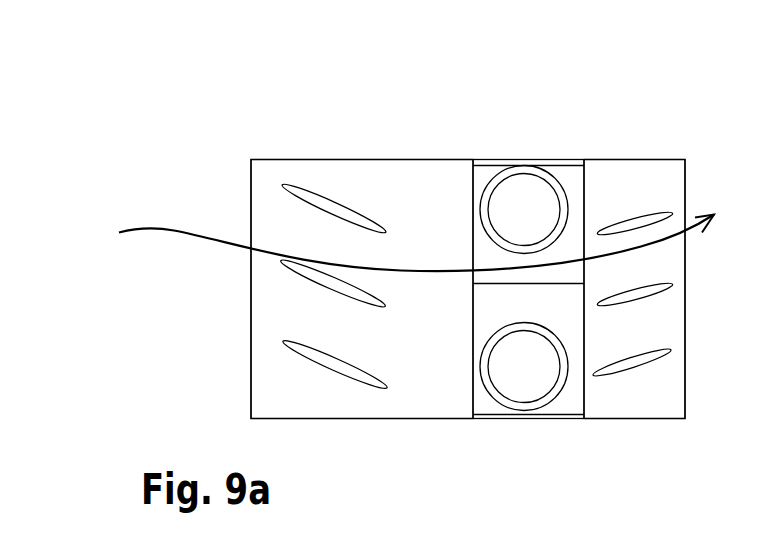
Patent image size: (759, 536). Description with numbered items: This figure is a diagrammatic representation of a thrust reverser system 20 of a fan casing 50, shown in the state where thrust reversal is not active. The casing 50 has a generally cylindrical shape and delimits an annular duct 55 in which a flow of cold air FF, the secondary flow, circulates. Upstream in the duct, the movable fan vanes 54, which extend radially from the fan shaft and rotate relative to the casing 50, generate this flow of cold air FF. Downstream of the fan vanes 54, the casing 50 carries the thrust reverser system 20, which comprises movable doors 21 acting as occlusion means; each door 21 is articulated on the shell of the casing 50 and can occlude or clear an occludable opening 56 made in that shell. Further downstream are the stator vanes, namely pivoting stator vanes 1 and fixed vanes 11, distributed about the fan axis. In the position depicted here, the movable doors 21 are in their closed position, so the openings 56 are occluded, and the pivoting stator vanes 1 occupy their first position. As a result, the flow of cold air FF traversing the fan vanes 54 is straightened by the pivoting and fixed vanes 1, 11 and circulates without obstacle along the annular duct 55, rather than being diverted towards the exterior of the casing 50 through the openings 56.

The pivoting stator vane 1 is at (612, 213).
The fixed vane 11 is at (634, 292).
The thrust reverser system 20 is at (634, 149).
The door 21 is at (486, 183).
The casing 50 is at (355, 418).
The fan vane 54 is at (321, 196).
The annular duct 55 is at (286, 315).
The occludable opening 56 is at (530, 208).
The flow of cold air FF is at (173, 228).